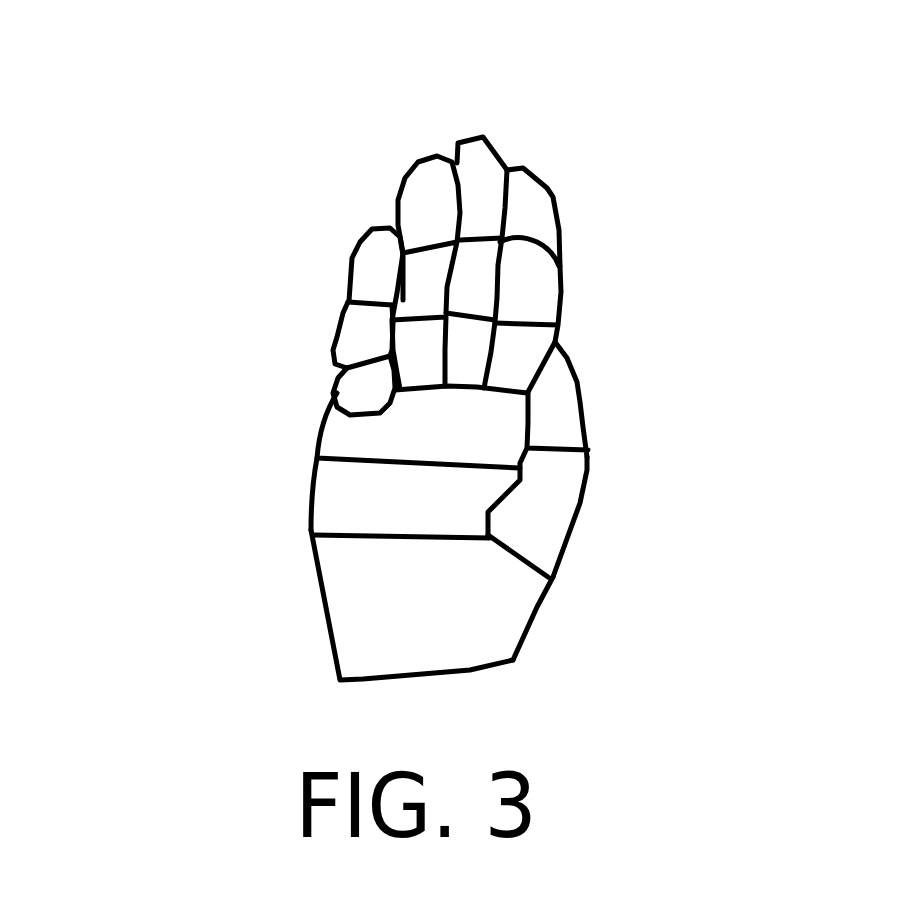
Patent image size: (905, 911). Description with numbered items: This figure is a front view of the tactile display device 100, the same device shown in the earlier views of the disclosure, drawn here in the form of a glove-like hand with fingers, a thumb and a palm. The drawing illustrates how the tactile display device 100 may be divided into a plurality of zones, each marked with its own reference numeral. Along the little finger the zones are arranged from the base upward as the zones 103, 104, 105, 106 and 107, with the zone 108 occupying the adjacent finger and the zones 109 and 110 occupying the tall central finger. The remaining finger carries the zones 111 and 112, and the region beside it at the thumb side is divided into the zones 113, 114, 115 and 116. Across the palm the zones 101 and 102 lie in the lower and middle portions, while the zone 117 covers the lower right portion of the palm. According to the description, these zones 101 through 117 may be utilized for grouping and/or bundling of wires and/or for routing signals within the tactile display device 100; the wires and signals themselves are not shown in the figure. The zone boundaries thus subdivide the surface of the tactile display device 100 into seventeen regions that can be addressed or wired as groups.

The tactile display device 100 is at (150, 114).
The zone 101 is at (373, 487).
The zone 102 is at (413, 432).
The zone 103 is at (360, 382).
The zone 104 is at (392, 355).
The zone 105 is at (362, 332).
The zone 106 is at (370, 285).
The zone 107 is at (382, 263).
The zone 108 is at (430, 213).
The zone 109 is at (477, 168).
The zone 110 is at (467, 265).
The zone 111 is at (528, 203).
The zone 112 is at (537, 285).
The zone 113 is at (530, 343).
The zone 114 is at (467, 352).
The zone 115 is at (550, 412).
The zone 116 is at (532, 498).
The zone 117 is at (473, 597).